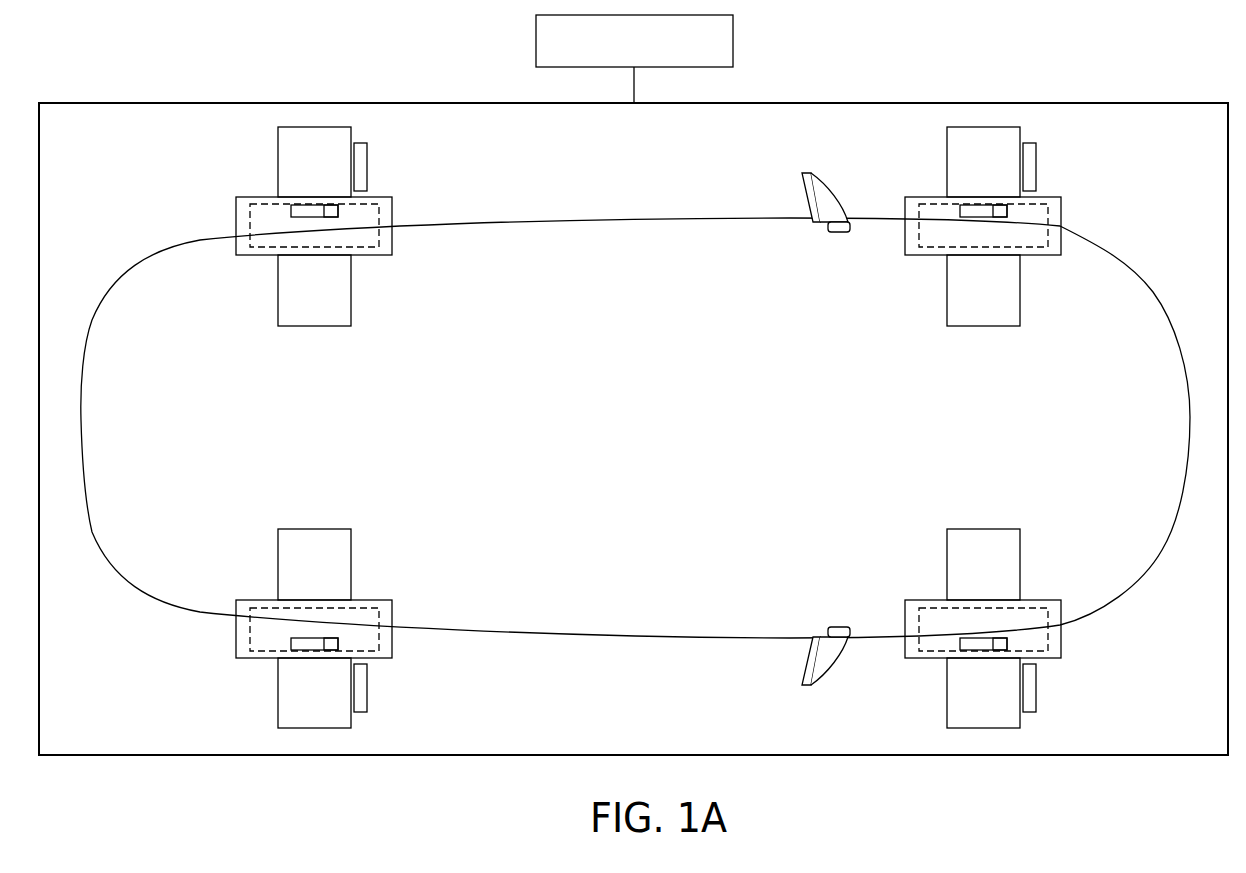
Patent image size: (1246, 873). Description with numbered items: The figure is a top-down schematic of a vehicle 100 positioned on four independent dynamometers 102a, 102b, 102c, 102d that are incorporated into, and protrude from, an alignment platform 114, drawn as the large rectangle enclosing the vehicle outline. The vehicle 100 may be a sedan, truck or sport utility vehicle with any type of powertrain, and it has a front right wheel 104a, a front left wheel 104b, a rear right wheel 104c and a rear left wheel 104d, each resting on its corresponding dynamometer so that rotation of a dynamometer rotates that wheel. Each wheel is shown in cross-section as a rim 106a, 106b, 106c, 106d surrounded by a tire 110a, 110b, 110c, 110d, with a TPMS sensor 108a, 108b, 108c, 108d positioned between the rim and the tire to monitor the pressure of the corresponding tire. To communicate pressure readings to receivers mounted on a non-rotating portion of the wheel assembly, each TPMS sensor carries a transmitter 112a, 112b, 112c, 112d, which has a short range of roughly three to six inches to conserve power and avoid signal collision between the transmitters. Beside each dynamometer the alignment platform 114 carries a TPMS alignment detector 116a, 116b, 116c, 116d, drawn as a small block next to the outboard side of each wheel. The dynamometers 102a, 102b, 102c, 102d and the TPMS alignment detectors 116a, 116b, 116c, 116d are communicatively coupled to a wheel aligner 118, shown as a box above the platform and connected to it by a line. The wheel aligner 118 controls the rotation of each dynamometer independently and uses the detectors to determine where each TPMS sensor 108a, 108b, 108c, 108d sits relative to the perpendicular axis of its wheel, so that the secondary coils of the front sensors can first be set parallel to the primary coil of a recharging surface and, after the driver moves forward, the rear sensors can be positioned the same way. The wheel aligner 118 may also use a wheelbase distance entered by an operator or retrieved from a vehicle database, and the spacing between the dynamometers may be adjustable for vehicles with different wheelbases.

The vehicle 100 is at (1153, 292).
The dynamometer 102a is at (947, 715).
The dynamometer 102b is at (947, 140).
The dynamometer 102c is at (278, 715).
The dynamometer 102d is at (278, 140).
The front right wheel 104a is at (986, 617).
The front left wheel 104b is at (986, 240).
The rear right wheel 104c is at (352, 617).
The rear left wheel 104d is at (354, 240).
The rim 106a is at (1062, 638).
The rim 106b is at (1062, 217).
The rim 106c is at (393, 638).
The rim 106d is at (393, 217).
The TPMS sensor 108a is at (974, 650).
The TPMS sensor 108b is at (974, 205).
The TPMS sensor 108c is at (305, 650).
The TPMS sensor 108d is at (305, 205).
The tire 110a is at (905, 612).
The tire 110b is at (905, 243).
The tire 110c is at (392, 612).
The tire 110d is at (392, 243).
The transmitter 112a is at (1007, 644).
The transmitter 112b is at (1007, 211).
The transmitter 112c is at (338, 644).
The transmitter 112d is at (338, 211).
The alignment platform 114 is at (122, 755).
The TPMS alignment detector 116a is at (1036, 698).
The TPMS alignment detector 116b is at (1036, 157).
The TPMS alignment detector 116c is at (367, 698).
The TPMS alignment detector 116d is at (367, 157).
The wheel aligner 118 is at (733, 40).